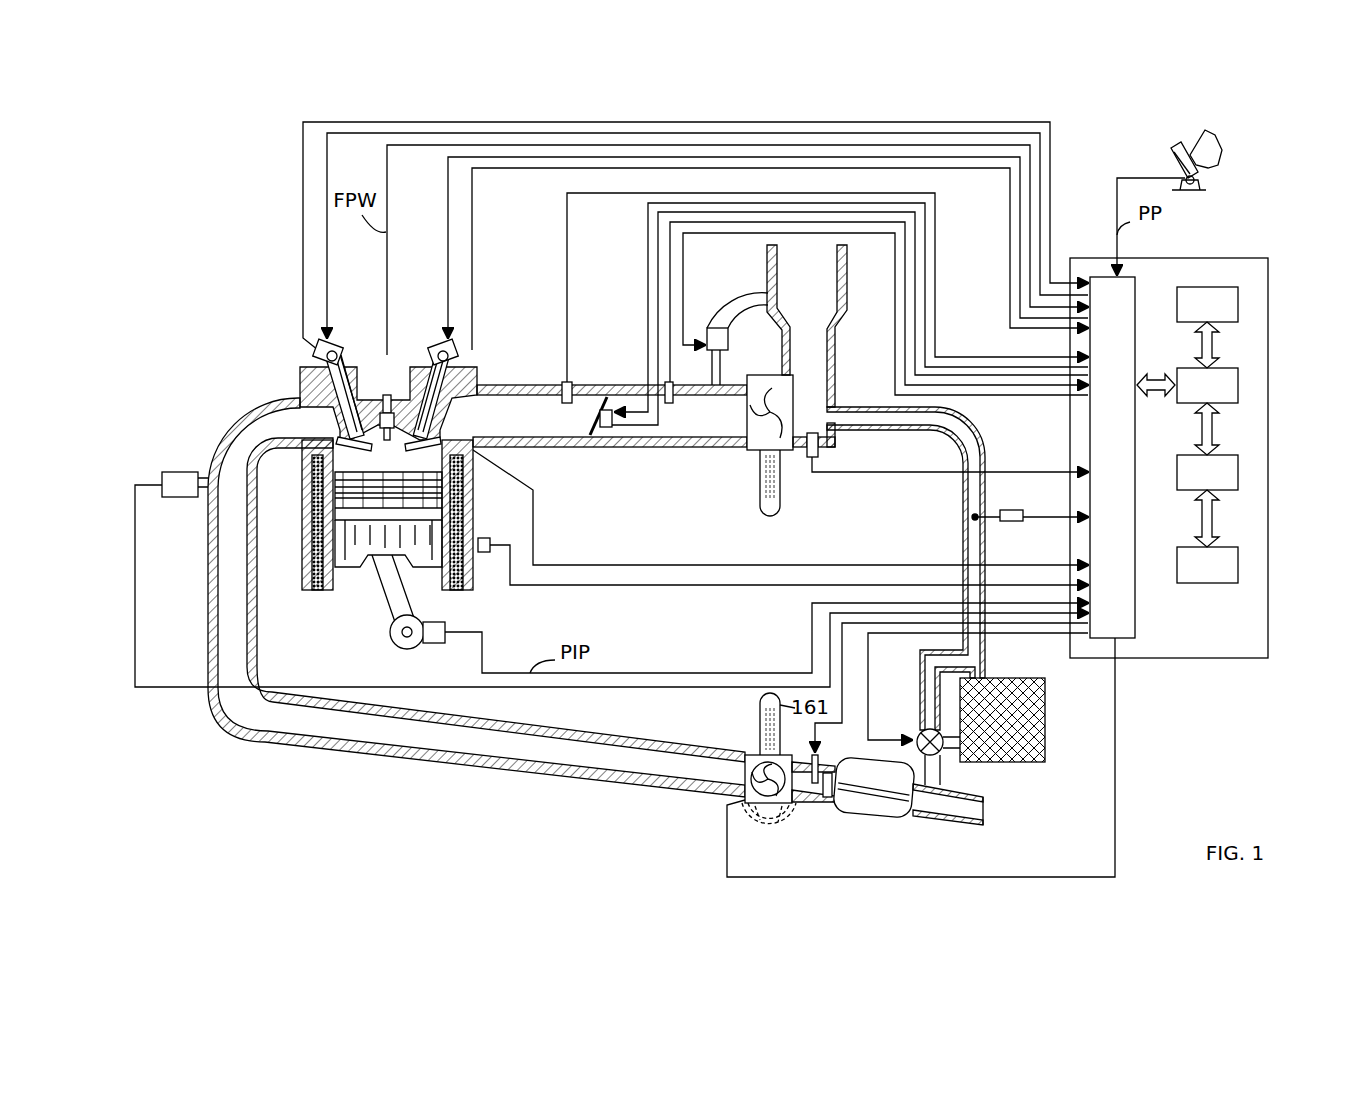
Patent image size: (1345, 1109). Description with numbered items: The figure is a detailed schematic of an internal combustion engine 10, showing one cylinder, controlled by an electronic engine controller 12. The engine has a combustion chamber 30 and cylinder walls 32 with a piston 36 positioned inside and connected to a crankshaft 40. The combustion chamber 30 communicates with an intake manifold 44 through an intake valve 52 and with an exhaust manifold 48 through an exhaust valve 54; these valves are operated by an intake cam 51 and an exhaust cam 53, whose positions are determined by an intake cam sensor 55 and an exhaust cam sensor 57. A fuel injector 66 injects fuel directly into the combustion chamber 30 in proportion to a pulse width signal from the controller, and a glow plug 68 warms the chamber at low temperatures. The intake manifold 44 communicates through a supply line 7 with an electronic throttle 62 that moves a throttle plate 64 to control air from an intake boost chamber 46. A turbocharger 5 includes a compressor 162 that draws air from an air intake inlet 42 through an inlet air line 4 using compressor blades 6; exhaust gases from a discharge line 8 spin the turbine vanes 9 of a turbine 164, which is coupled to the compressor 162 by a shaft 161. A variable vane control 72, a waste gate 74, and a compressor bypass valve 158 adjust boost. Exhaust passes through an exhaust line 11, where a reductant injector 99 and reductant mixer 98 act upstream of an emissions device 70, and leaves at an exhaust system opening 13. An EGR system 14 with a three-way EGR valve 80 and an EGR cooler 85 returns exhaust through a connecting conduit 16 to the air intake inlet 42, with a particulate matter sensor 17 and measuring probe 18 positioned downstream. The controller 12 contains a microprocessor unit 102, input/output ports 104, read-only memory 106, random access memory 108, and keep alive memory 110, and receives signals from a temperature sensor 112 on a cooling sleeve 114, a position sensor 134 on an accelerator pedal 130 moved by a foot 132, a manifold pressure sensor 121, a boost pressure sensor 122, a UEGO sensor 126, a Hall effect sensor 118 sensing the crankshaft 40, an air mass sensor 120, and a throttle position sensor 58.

The inlet air line 4 is at (838, 360).
The turbocharger 5 is at (700, 500).
The compressor vanes or blades 6 is at (762, 378).
The supply line 7 is at (528, 448).
The discharge line 8 is at (385, 750).
The turbine vane or blade 9 is at (797, 750).
The internal combustion engine 10 is at (247, 330).
The exhaust line 11 is at (815, 800).
The electronic engine controller 12 is at (1240, 248).
The exhaust system opening 13 is at (985, 808).
The EGR system 14 is at (1058, 730).
The connecting line or conduit 16 is at (963, 497).
The particulate matter sensor 17 is at (1010, 521).
The measuring probe 18 is at (975, 519).
The combustion chamber 30 is at (387, 455).
The cylinder walls 32 is at (335, 592).
The piston 36 is at (375, 560).
The crankshaft 40 is at (395, 642).
The air intake inlet 42 is at (796, 308).
The intake manifold 44 is at (508, 428).
The intake boost chamber 46 is at (671, 428).
The exhaust manifold 48 is at (260, 432).
The intake cam 51 is at (440, 346).
The intake valve 52 is at (428, 437).
The exhaust cam 53 is at (332, 346).
The exhaust valve 54 is at (352, 437).
The intake cam sensor 55 is at (457, 358).
The exhaust cam sensor 57 is at (318, 352).
The throttle position sensor 58 is at (612, 428).
The electronic throttle 62 is at (569, 384).
The throttle plate 64 is at (600, 398).
The fuel injector 66 is at (383, 410).
The glow plug 68 is at (485, 466).
The emissions device 70 is at (898, 815).
The variable vane control 72 is at (745, 790).
The waste gate 74 is at (770, 825).
The EGR valve 80 is at (918, 735).
The EGR cooler 85 is at (1045, 715).
The reductant mixer 98 is at (828, 798).
The reductant injector 99 is at (820, 762).
The microprocessor unit 102 is at (1238, 385).
The input/output ports 104 is at (1135, 285).
The read-only memory 106 is at (1238, 302).
The random access memory 108 is at (1238, 472).
The keep alive memory 110 is at (1238, 563).
The temperature sensor 112 is at (486, 538).
The cooling sleeve 114 is at (314, 510).
The Hall effect sensor 118 is at (436, 643).
The air mass sensor 120 is at (820, 447).
The pressure sensor 121 is at (562, 382).
The pressure sensor 122 is at (670, 382).
The universal exhaust gas oxygen sensor 126 is at (160, 478).
The accelerator pedal 130 is at (1176, 160).
The foot 132 is at (1220, 148).
The position sensor 134 is at (1205, 185).
The compressor bypass valve 158 is at (714, 328).
The shaft 161 is at (760, 493).
The compressor 162 is at (745, 450).
The turbine 164 is at (752, 755).